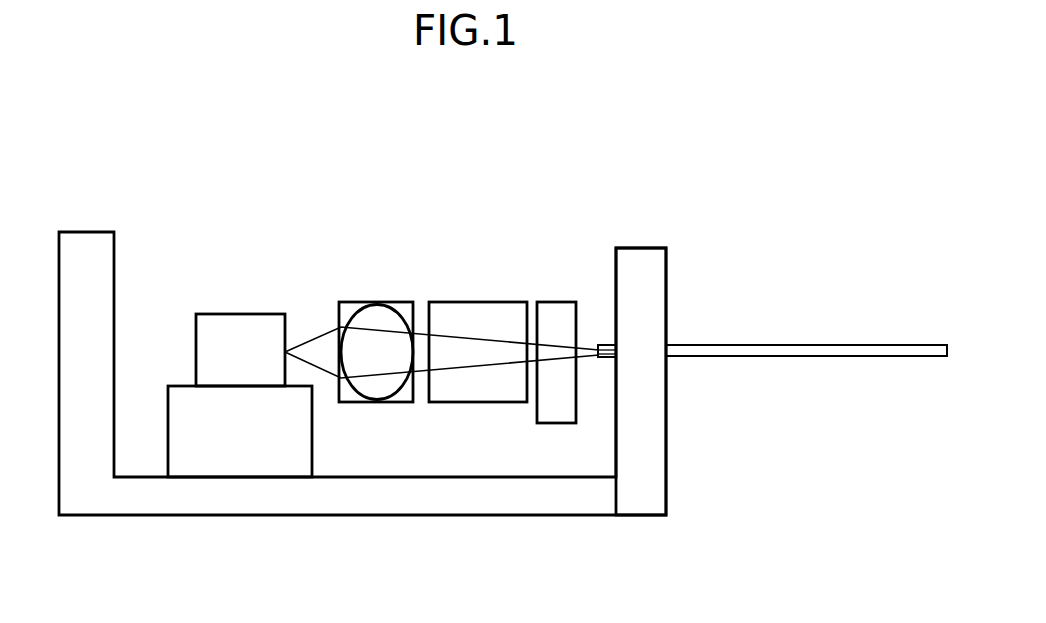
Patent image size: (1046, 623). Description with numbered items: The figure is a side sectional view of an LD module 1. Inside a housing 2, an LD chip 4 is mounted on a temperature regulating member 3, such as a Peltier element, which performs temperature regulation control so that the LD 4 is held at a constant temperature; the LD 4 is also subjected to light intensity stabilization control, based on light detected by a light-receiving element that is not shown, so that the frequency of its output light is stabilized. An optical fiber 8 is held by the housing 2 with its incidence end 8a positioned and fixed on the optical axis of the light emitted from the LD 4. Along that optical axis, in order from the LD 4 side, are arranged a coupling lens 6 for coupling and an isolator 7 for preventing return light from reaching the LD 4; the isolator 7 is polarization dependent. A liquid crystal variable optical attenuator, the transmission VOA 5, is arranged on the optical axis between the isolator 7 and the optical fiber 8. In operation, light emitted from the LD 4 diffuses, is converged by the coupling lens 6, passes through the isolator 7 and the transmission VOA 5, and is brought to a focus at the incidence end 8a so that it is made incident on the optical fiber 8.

The LD module 1 is at (540, 172).
The housing 2 is at (640, 248).
The temperature regulating member 3 is at (182, 385).
The LD 4 is at (245, 313).
The transmission VOA 5 is at (560, 302).
The coupling lens 6 is at (376, 310).
The isolator 7 is at (478, 302).
The optical fiber 8 is at (788, 344).
The incidence end 8a is at (604, 360).